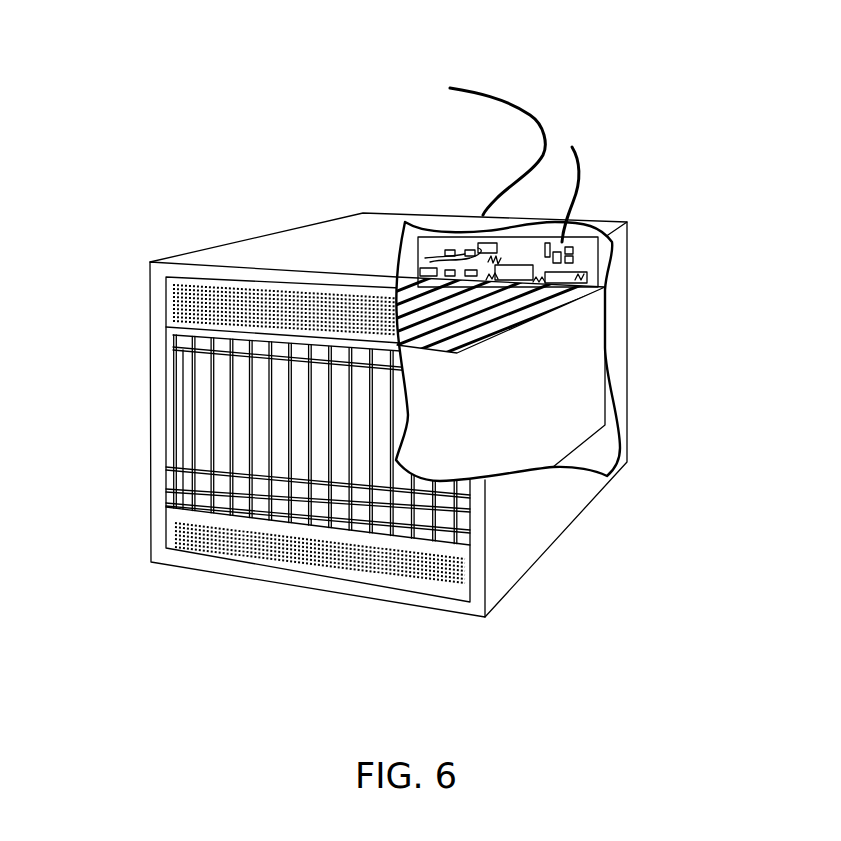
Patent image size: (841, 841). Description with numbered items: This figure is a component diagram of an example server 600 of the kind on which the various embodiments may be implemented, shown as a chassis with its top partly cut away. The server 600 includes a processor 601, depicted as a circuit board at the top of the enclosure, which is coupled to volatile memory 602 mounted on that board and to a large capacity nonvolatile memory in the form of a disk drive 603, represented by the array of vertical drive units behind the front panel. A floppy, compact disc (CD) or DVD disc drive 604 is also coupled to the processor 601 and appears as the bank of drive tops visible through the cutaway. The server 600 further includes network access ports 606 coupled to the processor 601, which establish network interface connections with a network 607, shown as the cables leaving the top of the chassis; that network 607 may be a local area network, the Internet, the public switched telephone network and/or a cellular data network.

The server 600 is at (298, 226).
The processor 601 is at (517, 273).
The volatile memory 602 is at (582, 278).
The disk drive 603 is at (220, 387).
The disc drive 604 is at (396, 273).
The network access ports 606 is at (198, 415).
The network 607 is at (548, 138).